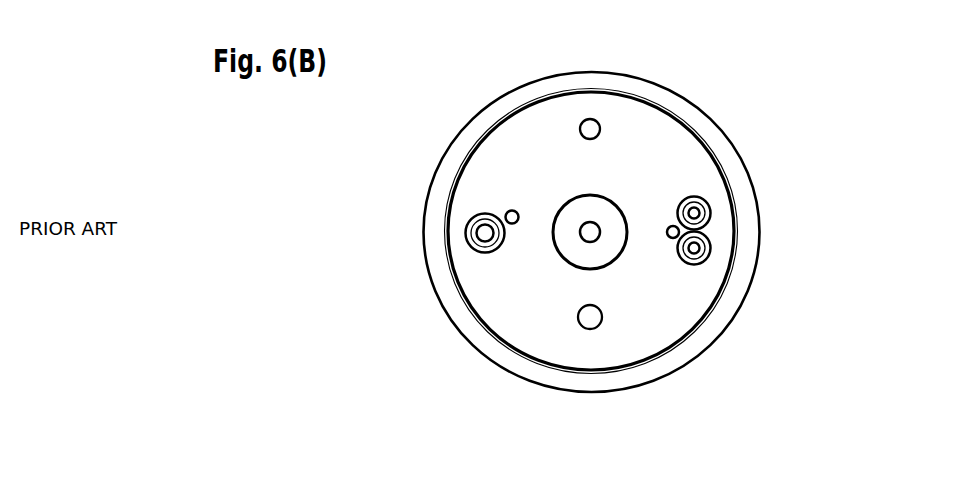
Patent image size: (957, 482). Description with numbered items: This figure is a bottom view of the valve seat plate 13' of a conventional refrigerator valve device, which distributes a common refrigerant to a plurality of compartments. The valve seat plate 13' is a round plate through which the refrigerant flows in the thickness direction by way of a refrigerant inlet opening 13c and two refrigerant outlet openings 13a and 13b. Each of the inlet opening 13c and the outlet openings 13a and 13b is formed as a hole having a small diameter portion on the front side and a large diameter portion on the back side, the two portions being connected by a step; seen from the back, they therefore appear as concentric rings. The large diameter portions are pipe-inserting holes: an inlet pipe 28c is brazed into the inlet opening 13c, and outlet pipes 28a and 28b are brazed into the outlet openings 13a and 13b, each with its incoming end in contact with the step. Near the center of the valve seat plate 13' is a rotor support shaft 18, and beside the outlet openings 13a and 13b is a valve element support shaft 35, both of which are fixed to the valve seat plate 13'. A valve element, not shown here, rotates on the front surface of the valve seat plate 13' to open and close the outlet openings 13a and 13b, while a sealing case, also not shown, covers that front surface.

The valve seat plate 13' is at (568, 203).
The rotor support shaft 18 is at (594, 229).
The refrigerant outlet opening 13a is at (696, 213).
The refrigerant outlet opening 13b is at (695, 250).
The refrigerant inlet opening 13c is at (483, 237).
The outlet pipe 28a is at (686, 199).
The outlet pipe 28b is at (688, 266).
The inlet pipe 28c is at (497, 246).
The valve element support shaft 35 is at (669, 240).